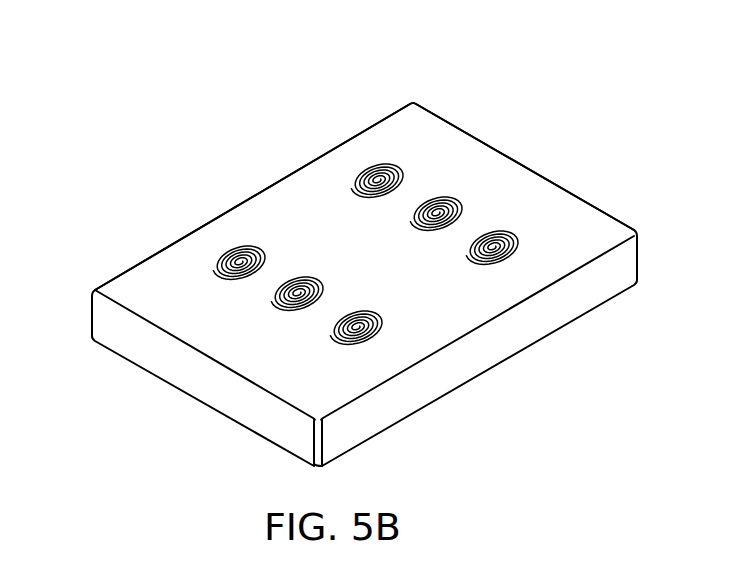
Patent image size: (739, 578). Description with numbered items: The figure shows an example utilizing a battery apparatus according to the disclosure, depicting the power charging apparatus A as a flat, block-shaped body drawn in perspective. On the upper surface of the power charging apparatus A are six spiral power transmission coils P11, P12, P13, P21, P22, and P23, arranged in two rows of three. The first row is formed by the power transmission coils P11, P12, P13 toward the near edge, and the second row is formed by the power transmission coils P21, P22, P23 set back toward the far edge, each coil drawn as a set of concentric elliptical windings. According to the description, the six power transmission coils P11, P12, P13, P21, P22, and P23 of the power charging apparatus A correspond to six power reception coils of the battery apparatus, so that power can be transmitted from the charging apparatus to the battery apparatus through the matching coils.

The power charging apparatus A is at (532, 173).
The power transmission coil P11 is at (213, 257).
The power transmission coil P12 is at (270, 300).
The power transmission coil P13 is at (328, 338).
The power transmission coil P21 is at (400, 160).
The power transmission coil P22 is at (455, 193).
The power transmission coil P23 is at (523, 230).